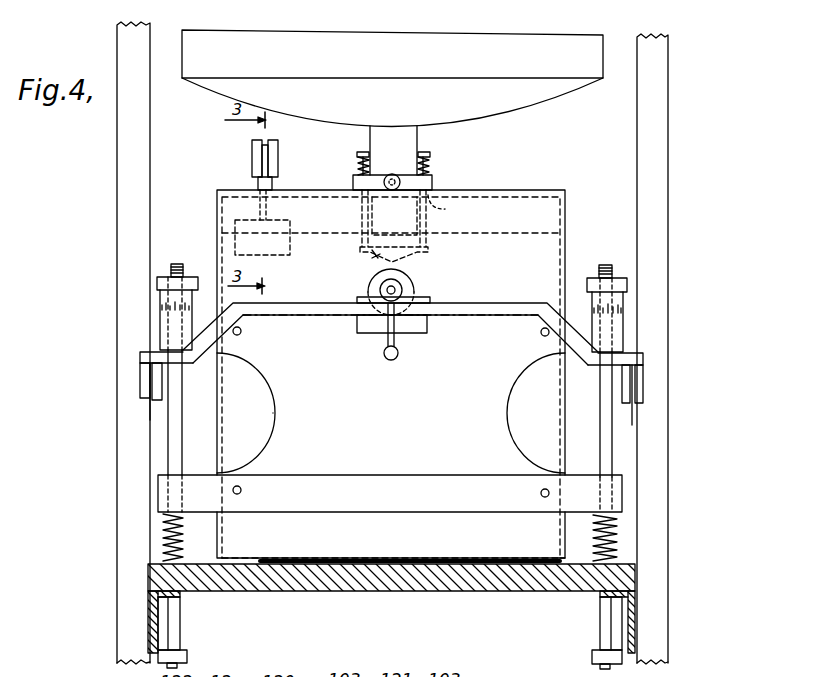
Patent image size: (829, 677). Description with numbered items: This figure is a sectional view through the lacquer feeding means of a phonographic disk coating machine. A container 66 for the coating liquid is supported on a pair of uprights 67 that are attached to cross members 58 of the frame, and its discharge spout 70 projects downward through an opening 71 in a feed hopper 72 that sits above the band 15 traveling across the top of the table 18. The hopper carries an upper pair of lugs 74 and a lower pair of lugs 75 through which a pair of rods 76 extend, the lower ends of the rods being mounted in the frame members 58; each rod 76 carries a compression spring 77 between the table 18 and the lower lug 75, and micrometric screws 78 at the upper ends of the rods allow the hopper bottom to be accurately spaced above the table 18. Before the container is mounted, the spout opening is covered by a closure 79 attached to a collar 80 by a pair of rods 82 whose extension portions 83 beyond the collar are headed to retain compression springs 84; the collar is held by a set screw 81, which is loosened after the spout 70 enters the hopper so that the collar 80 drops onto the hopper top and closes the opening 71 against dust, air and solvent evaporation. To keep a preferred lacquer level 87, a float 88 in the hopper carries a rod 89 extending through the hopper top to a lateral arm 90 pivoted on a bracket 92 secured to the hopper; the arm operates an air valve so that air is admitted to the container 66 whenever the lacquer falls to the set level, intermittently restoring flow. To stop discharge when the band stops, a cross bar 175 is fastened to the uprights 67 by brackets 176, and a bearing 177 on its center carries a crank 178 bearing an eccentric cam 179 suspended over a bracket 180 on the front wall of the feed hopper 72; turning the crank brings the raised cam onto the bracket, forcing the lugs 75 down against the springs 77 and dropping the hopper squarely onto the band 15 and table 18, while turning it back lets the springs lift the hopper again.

The band 15 is at (575, 566).
The table 18 is at (370, 582).
The cross member 58 is at (158, 626).
The container 66 is at (596, 72).
The uprights 67 is at (117, 296).
The spout 70 is at (417, 136).
The opening 71 is at (446, 207).
The feed hopper 72 is at (549, 218).
The upper lugs 74 is at (160, 328).
The lower lugs 75 is at (158, 493).
The rods 76 is at (168, 433).
The compression spring 77 is at (165, 530).
The micrometric screws 78 is at (157, 284).
The closure 79 is at (372, 256).
The collar 80 is at (433, 181).
The set screw 81 is at (394, 175).
The rods 82 is at (362, 213).
The extension portions 83 is at (358, 162).
The compression spring 84 is at (362, 167).
The lacquer level 87 is at (517, 235).
The float 88 is at (235, 228).
The rod 89 is at (278, 166).
The lateral arm 90 is at (252, 150).
The bracket 92 is at (252, 169).
The cross bar 175 is at (320, 316).
The brackets 176 is at (150, 385).
The bearing 177 is at (425, 298).
The crank 178 is at (399, 349).
The eccentric cam 179 is at (405, 280).
The bracket 180 is at (372, 333).